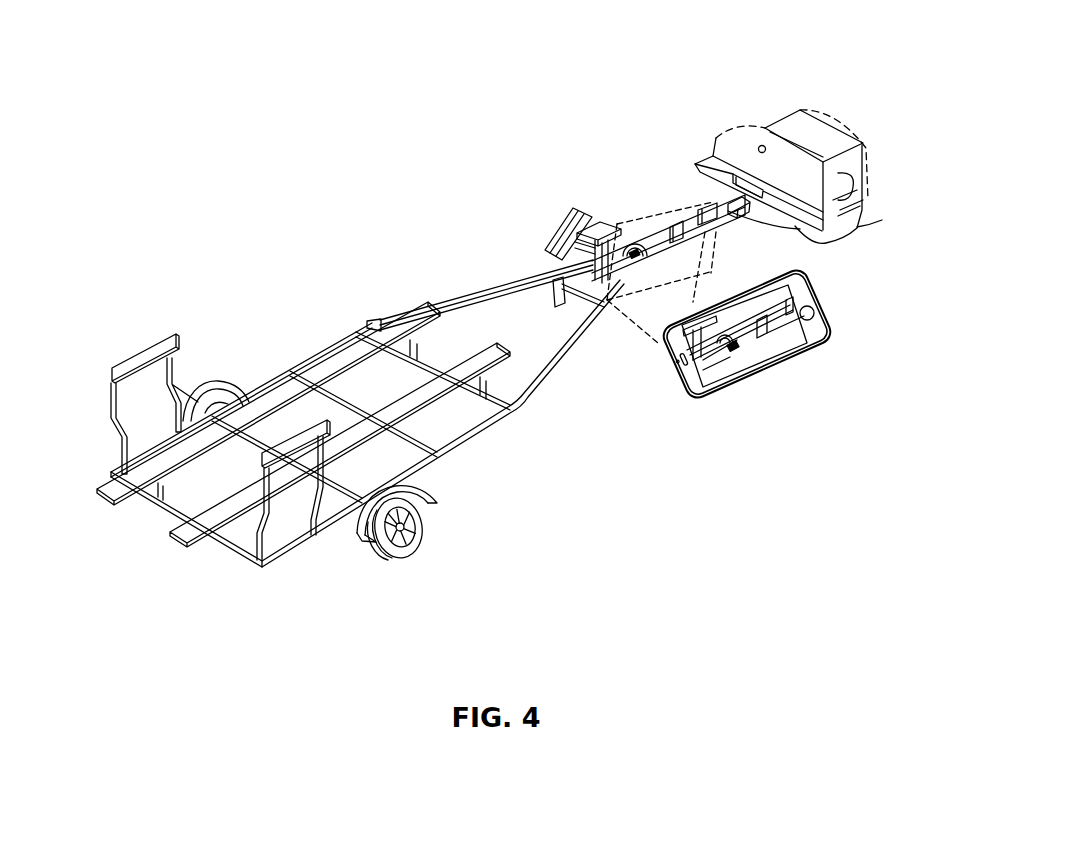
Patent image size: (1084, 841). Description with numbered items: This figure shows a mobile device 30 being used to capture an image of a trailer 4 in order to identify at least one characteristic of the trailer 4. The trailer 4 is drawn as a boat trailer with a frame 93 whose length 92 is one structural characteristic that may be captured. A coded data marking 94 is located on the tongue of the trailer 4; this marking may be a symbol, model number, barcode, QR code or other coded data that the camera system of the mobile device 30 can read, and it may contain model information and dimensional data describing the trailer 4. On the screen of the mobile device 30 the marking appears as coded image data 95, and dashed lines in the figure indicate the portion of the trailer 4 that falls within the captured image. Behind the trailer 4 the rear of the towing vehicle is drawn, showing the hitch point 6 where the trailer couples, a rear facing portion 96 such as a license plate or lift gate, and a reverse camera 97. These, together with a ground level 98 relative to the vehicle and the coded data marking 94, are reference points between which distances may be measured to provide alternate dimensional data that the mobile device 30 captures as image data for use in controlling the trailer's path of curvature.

The trailer 4 is at (428, 266).
The hitch point 6 is at (858, 226).
The mobile device 30 is at (830, 302).
The length 92 is at (488, 424).
The frame 93 is at (336, 531).
The coded data marking 94 is at (647, 231).
The coded image data 95 is at (738, 343).
The rear facing portion 96 is at (711, 155).
The reverse camera 97 is at (716, 138).
The ground level 98 is at (583, 467).